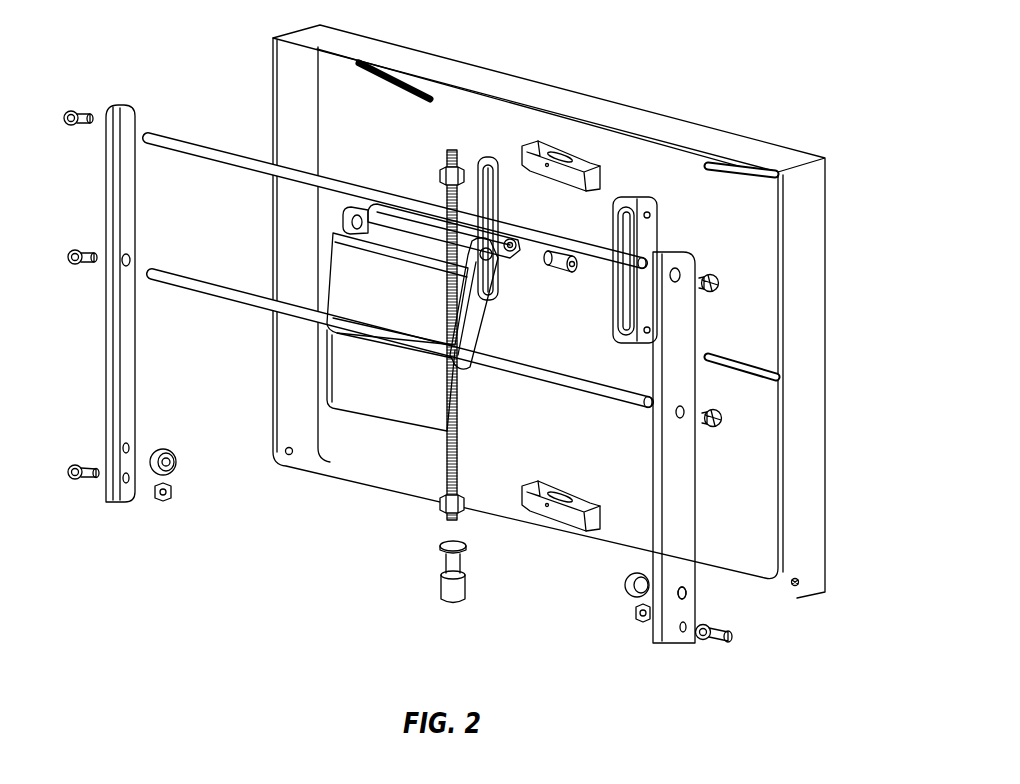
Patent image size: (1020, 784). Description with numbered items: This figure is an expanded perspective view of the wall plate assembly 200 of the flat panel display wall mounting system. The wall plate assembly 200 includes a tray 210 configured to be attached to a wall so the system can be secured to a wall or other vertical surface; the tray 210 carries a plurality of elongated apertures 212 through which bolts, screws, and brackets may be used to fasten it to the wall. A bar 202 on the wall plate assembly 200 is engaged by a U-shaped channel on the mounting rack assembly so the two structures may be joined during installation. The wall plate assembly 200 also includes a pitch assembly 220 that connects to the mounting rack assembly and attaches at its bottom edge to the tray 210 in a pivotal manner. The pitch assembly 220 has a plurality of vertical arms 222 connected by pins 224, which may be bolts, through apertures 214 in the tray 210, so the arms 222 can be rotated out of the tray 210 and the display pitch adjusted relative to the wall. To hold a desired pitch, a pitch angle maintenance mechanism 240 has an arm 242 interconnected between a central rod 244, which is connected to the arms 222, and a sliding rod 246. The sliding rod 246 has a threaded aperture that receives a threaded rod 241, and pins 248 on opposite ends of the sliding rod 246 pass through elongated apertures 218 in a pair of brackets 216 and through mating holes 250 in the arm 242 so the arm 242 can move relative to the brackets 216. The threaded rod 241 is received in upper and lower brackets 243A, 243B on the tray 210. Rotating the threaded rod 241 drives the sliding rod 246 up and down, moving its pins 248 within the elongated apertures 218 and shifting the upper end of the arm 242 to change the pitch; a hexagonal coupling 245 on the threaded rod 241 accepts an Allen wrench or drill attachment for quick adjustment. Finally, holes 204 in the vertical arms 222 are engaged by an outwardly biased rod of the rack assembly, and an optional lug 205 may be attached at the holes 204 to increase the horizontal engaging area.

The wall plate assembly 200 is at (580, 58).
The bar 202 is at (594, 232).
The holes 204 is at (688, 595).
The lug 205 is at (624, 584).
The tray 210 is at (779, 148).
The elongated apertures 212 is at (406, 86).
The apertures 214 is at (799, 580).
The brackets 216 is at (638, 274).
The elongated apertures 218 is at (623, 305).
The pitch assembly 220 is at (204, 116).
The vertical arms 222 is at (678, 512).
The pins 224 is at (82, 476).
The pitch angle maintenance mechanism 240 is at (402, 358).
The threaded rod 241 is at (462, 418).
The arm 242 is at (395, 297).
The upper bracket 243A is at (553, 148).
The lower bracket 243B is at (577, 492).
The central rod 244 is at (229, 300).
The hexagonal coupling 245 is at (462, 584).
The sliding rod 246 is at (414, 218).
The pins 248 is at (548, 264).
The mating holes 250 is at (490, 266).